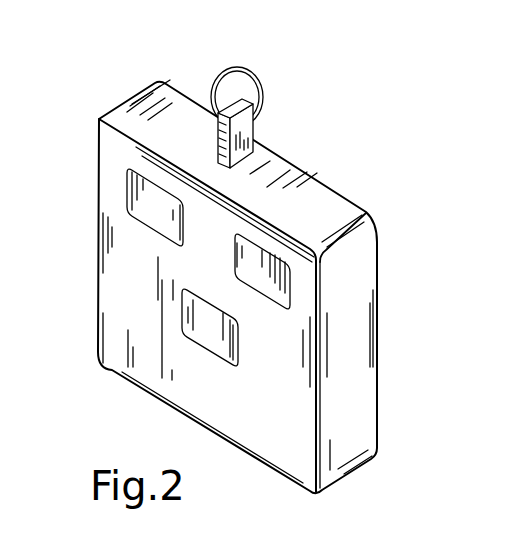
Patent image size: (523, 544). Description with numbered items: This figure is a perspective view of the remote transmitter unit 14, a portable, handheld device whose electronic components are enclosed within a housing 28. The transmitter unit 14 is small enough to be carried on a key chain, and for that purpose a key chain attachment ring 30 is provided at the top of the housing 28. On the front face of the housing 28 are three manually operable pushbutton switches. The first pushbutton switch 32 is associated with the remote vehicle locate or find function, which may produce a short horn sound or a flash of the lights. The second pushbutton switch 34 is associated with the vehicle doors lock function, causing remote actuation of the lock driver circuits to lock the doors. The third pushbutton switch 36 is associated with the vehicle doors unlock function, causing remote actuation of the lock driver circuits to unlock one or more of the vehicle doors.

The transmitter unit 14 is at (322, 189).
The housing 28 is at (143, 97).
The key chain attachment ring 30 is at (236, 68).
The first pushbutton switch 32 is at (198, 308).
The second pushbutton switch 34 is at (150, 198).
The third pushbutton switch 36 is at (282, 305).